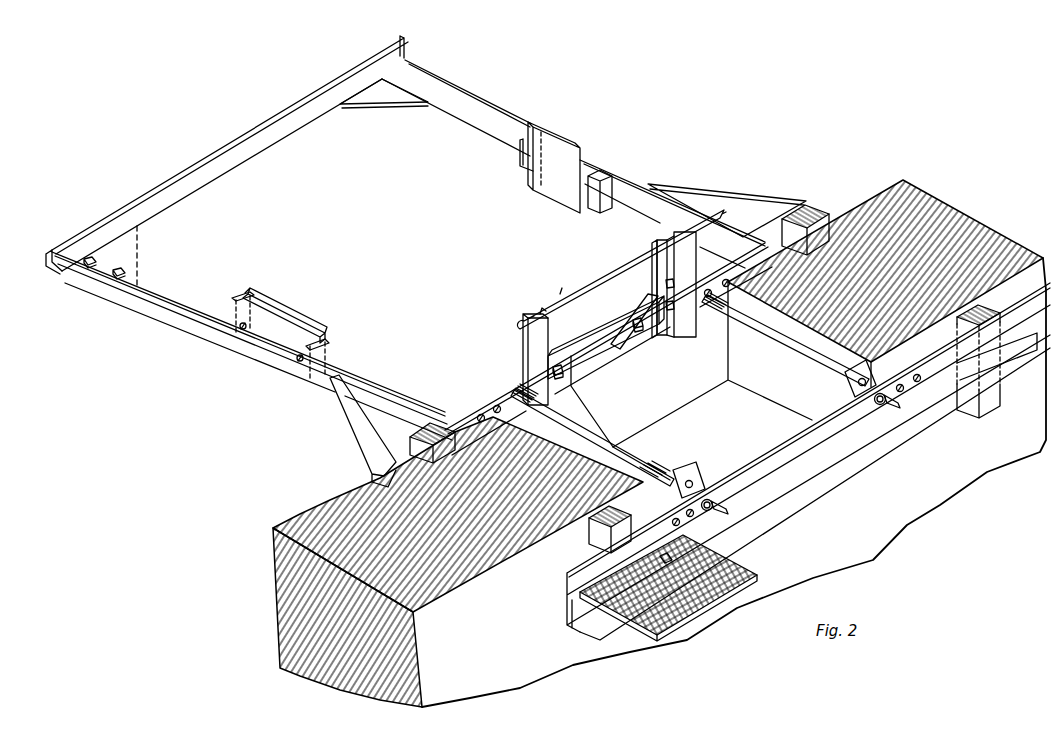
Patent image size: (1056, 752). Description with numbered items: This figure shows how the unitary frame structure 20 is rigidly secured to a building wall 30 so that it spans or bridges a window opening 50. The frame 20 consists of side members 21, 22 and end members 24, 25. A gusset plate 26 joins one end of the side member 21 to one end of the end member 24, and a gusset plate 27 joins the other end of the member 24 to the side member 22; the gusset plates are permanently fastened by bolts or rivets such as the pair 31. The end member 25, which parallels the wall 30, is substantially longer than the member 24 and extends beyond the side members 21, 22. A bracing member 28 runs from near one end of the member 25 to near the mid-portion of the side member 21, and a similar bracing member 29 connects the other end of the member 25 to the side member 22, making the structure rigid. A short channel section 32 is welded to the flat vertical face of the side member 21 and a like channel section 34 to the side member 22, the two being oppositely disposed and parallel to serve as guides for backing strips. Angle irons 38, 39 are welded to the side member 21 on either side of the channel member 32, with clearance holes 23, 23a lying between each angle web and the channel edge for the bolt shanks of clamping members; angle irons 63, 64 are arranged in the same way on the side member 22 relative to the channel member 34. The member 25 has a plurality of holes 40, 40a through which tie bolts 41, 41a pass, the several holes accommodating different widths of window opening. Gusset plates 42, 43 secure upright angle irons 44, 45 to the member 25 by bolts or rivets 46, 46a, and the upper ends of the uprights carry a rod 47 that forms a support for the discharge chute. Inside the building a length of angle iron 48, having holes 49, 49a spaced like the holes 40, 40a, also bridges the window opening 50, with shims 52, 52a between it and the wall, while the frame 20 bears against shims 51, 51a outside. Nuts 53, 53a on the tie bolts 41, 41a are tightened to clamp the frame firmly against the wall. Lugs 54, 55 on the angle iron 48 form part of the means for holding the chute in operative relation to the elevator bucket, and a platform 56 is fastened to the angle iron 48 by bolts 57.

The unitary frame structure 20 is at (248, 153).
The side member 21 is at (205, 292).
The side member 22 is at (487, 130).
The clearance hole 23 is at (300, 363).
The clearance hole 23a is at (243, 331).
The end member 24 is at (268, 125).
The end member 25 is at (468, 415).
The gusset plate 26 is at (140, 238).
The gusset plate 27 is at (395, 100).
The bracing member 28 is at (356, 439).
The bracing member 29 is at (727, 200).
The building wall 30 is at (294, 520).
The bolts or rivets 31 is at (95, 272).
The channel section 32 is at (288, 316).
The channel section 34 is at (568, 136).
The angle iron 38 is at (326, 345).
The angle iron 39 is at (243, 300).
The hole 40 is at (498, 405).
The hole 40a is at (712, 288).
The tie bolt 41 is at (595, 440).
The tie bolt 41a is at (790, 352).
The gusset plate 42 is at (557, 306).
The gusset plate 43 is at (650, 300).
The upright angle iron 44 is at (528, 347).
The upright angle iron 45 is at (666, 271).
The bolts or rivets 46 is at (560, 374).
The bolts or rivets 46a is at (676, 306).
The rod 47 is at (580, 282).
The angle iron 48 is at (896, 428).
The hole 49 is at (680, 514).
The hole 49a is at (905, 390).
The window opening 50 is at (855, 468).
The shim 51 is at (425, 430).
The shim 51a is at (803, 215).
The shim 52 is at (588, 548).
The shim 52a is at (992, 312).
The nut 53 is at (718, 500).
The nut 53a is at (876, 408).
The lug 54 is at (672, 474).
The lug 55 is at (852, 392).
The platform 56 is at (748, 574).
The bolt 57 is at (660, 554).
The angle iron 63 is at (606, 202).
The angle iron 64 is at (526, 160).